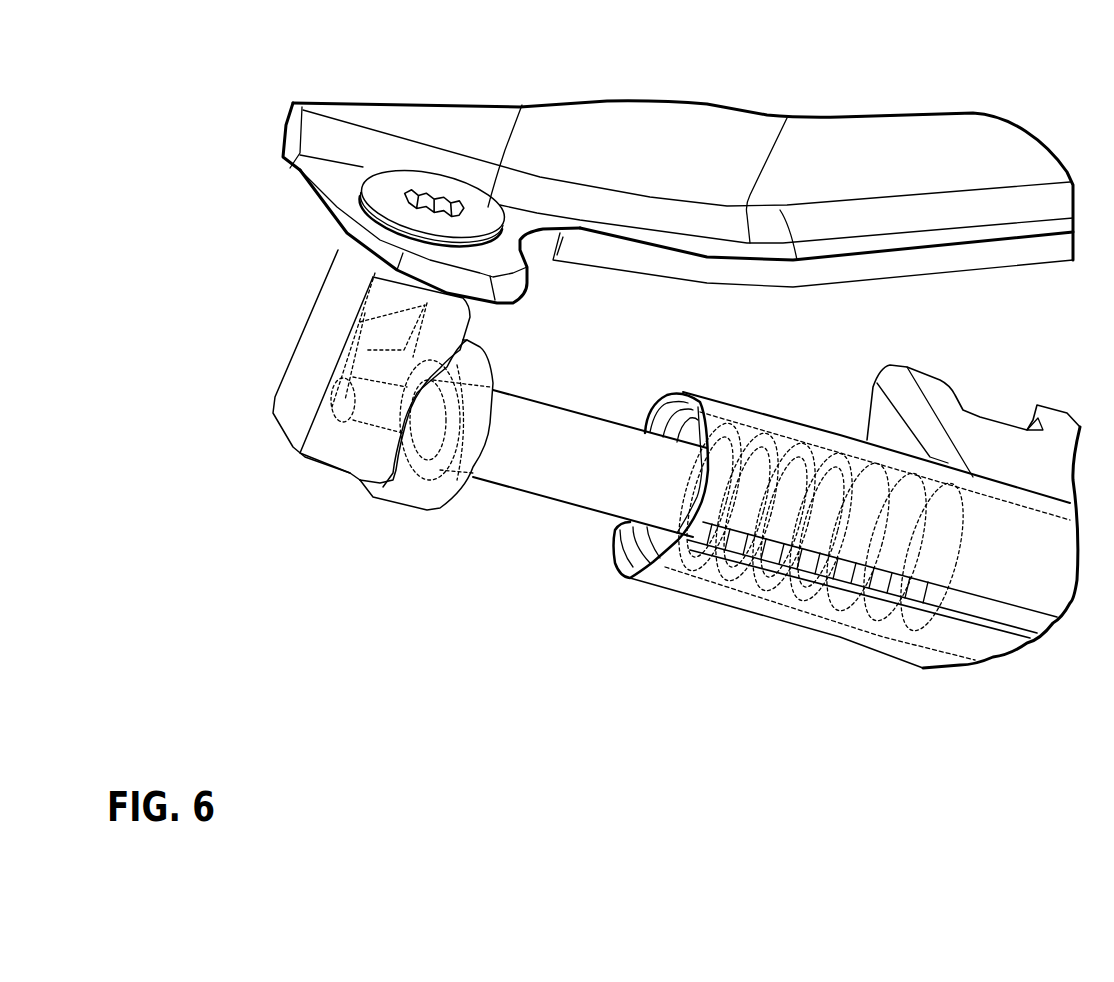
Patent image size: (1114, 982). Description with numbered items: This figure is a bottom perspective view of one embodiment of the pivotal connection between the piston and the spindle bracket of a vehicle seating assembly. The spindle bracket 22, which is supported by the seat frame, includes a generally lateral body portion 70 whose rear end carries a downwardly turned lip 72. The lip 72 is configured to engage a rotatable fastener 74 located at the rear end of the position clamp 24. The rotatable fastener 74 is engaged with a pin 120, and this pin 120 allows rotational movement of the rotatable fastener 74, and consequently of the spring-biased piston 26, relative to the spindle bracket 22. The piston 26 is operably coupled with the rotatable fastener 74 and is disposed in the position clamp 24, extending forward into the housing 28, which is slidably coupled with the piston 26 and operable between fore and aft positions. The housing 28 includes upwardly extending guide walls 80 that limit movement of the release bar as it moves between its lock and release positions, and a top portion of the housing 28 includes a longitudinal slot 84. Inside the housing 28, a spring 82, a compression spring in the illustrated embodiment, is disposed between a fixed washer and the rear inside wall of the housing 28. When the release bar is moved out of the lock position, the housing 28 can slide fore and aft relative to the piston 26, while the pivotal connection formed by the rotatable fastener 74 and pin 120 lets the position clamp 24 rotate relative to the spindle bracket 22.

The spindle bracket 22 is at (457, 132).
The body portion 70 is at (933, 150).
The downwardly turned lip 72 is at (343, 183).
The pin 120 is at (430, 190).
The rotatable fastener 74 is at (313, 370).
The spring-biased piston 26 is at (543, 467).
The position clamp 24 is at (1033, 577).
The housing 28 is at (763, 420).
The spring 82 is at (800, 557).
The longitudinal slot 84 is at (887, 580).
The guide walls 80 is at (1053, 443).